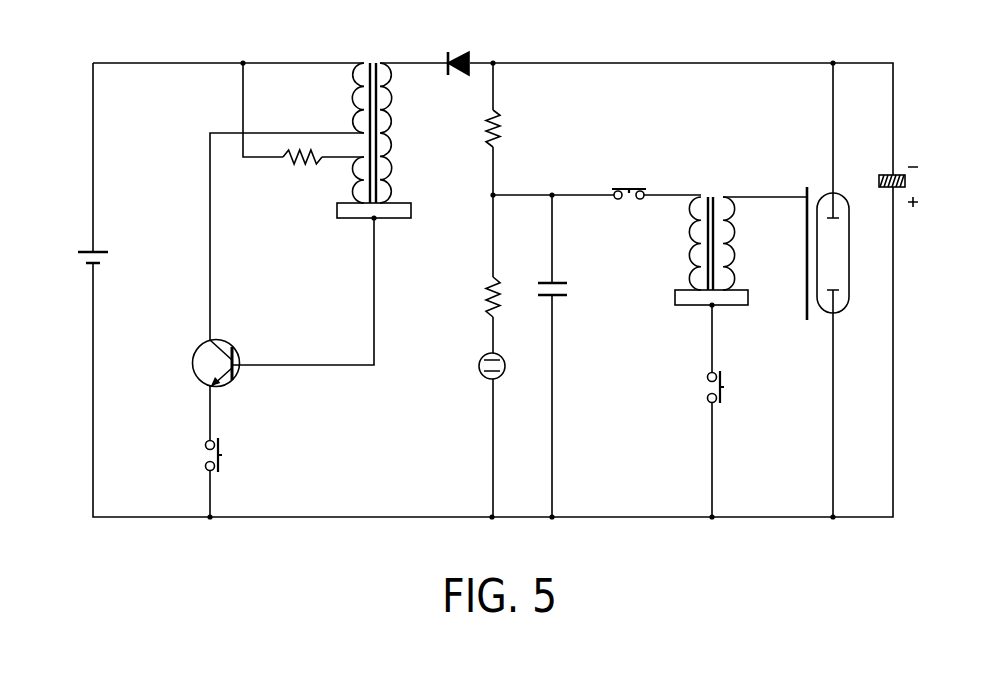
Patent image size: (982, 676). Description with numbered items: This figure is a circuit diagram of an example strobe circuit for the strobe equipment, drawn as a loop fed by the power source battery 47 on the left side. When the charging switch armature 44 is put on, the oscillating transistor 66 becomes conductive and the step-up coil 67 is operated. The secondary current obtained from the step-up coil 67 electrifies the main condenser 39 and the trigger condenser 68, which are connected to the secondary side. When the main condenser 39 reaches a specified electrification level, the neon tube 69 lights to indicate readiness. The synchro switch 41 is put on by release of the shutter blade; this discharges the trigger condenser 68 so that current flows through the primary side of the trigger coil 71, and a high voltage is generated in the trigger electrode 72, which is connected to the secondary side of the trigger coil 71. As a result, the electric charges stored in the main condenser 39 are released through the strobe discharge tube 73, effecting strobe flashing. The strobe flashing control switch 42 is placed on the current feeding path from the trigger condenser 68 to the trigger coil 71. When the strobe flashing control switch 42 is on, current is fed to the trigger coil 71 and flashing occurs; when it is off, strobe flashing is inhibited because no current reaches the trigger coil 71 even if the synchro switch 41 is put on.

The main condenser 39 is at (882, 170).
The synchro switch 41 is at (725, 390).
The strobe flashing control switch 42 is at (624, 190).
The charging switch armature 44 is at (205, 444).
The power source battery 47 is at (100, 241).
The oscillating transistor 66 is at (227, 388).
The step-up coil 67 is at (411, 213).
The trigger condenser 68 is at (558, 297).
The neon tube 69 is at (500, 377).
The trigger coil 71 is at (700, 195).
The trigger electrode 72 is at (805, 313).
The strobe discharge tube 73 is at (849, 272).